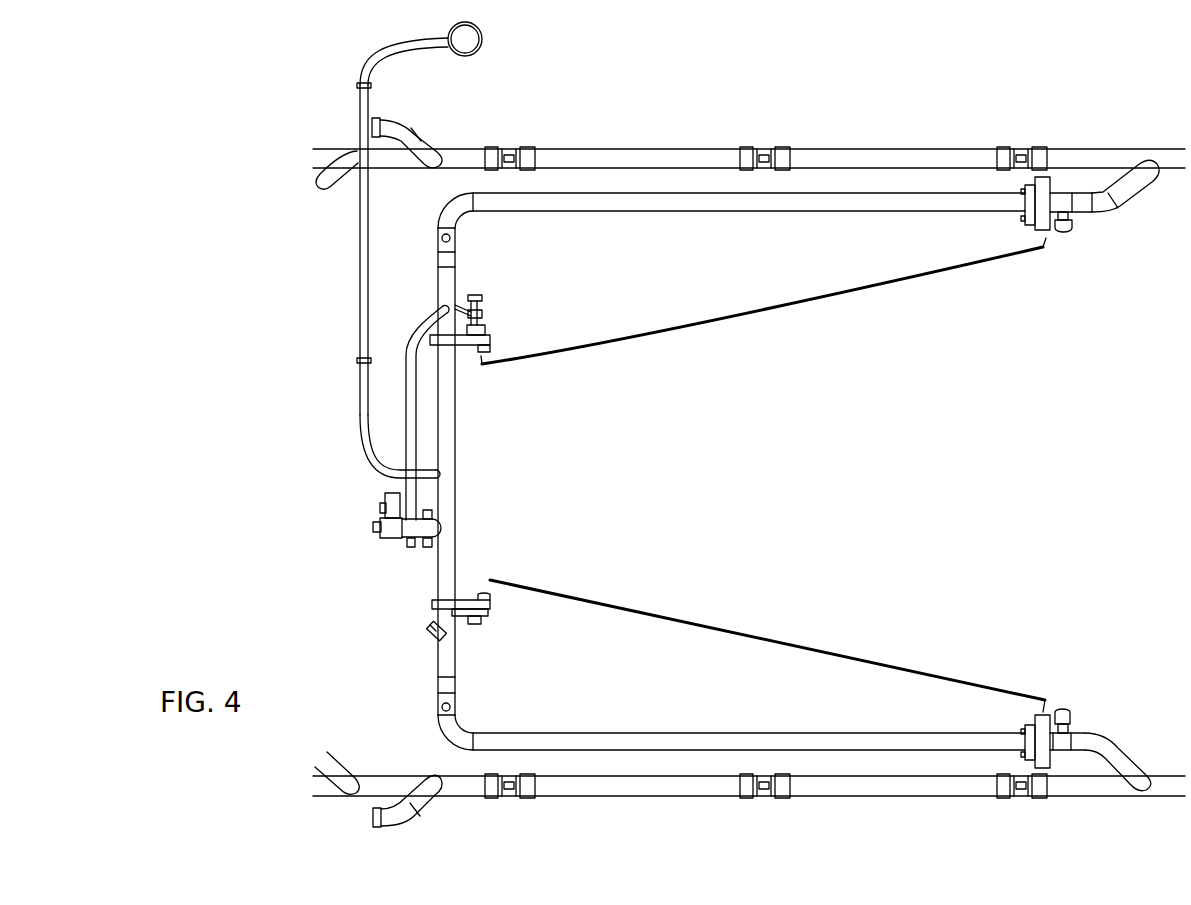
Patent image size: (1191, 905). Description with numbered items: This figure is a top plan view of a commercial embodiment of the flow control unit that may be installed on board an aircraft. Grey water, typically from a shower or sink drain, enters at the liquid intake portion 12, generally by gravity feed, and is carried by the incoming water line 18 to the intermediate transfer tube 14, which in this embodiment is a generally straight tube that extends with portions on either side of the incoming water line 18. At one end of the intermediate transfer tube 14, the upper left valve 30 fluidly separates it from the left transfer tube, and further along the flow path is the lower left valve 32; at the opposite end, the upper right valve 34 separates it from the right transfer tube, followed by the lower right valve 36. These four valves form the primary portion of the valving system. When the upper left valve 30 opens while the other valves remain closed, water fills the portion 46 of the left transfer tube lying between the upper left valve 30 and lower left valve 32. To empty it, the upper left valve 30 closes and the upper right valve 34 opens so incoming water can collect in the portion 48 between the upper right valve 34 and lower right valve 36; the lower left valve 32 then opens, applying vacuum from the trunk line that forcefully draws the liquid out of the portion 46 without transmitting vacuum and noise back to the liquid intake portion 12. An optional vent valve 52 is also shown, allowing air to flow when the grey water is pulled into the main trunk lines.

The liquid intake portion 12 is at (468, 44).
The intermediate transfer tube 14 is at (457, 487).
The incoming water line 18 is at (360, 210).
The upper left valve 30 is at (462, 600).
The lower left valve 32 is at (1062, 708).
The upper right valve 34 is at (488, 334).
The lower right valve 36 is at (1062, 233).
The portion of the left transfer tube 46 is at (768, 641).
The portion of the right transfer tube 48 is at (766, 313).
The vent valve 52 is at (410, 527).